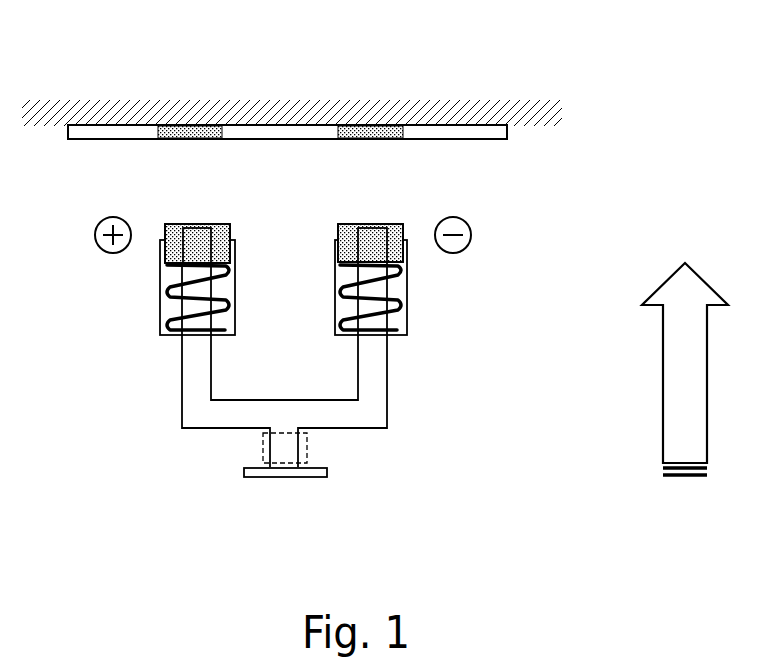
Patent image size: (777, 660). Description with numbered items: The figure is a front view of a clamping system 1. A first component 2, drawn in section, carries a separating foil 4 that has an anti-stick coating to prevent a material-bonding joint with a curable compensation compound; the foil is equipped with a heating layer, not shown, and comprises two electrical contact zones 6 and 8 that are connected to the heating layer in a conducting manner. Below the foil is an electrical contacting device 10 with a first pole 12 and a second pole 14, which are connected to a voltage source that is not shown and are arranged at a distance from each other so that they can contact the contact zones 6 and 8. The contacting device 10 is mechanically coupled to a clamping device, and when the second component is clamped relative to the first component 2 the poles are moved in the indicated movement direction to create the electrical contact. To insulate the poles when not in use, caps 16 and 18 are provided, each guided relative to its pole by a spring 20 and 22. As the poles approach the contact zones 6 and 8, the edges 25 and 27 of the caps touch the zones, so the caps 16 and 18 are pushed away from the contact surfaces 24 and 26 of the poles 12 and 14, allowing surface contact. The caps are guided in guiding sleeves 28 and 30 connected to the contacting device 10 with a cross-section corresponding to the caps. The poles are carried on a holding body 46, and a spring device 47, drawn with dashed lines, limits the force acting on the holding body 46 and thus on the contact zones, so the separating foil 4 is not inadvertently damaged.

The clamping system 1 is at (585, 148).
The first component 2 is at (430, 108).
The separating foil 4 is at (483, 133).
The electrical contact zone 6 is at (352, 140).
The electrical contact zone 8 is at (172, 140).
The electrical contacting device 10 is at (323, 325).
The first pole 12 is at (369, 276).
The second pole 14 is at (230, 261).
The cap 16 is at (338, 236).
The cap 18 is at (230, 238).
The spring 20 is at (338, 290).
The spring 22 is at (228, 305).
The contact surface 24 is at (372, 220).
The edge 25 is at (412, 219).
The contact surface 26 is at (200, 220).
The edge 27 is at (237, 219).
The guiding sleeve 28 is at (335, 337).
The guiding sleeve 30 is at (235, 325).
The holding body 46 is at (230, 417).
The spring device 47 is at (305, 445).